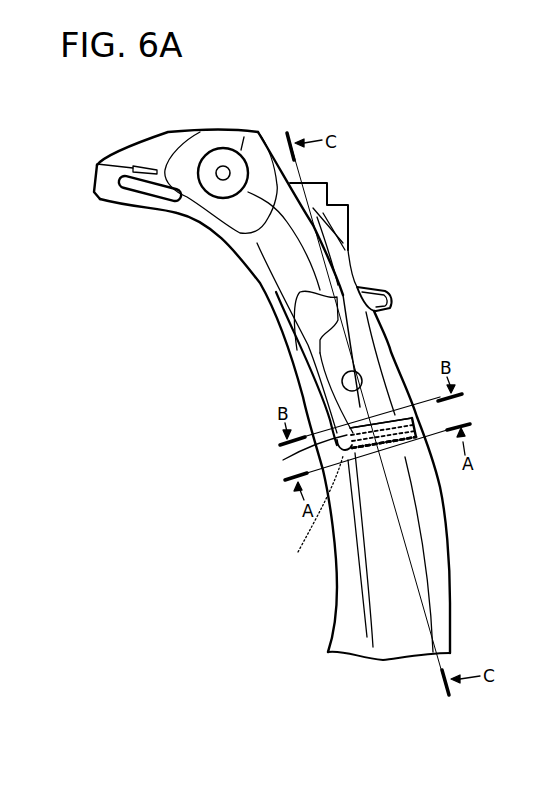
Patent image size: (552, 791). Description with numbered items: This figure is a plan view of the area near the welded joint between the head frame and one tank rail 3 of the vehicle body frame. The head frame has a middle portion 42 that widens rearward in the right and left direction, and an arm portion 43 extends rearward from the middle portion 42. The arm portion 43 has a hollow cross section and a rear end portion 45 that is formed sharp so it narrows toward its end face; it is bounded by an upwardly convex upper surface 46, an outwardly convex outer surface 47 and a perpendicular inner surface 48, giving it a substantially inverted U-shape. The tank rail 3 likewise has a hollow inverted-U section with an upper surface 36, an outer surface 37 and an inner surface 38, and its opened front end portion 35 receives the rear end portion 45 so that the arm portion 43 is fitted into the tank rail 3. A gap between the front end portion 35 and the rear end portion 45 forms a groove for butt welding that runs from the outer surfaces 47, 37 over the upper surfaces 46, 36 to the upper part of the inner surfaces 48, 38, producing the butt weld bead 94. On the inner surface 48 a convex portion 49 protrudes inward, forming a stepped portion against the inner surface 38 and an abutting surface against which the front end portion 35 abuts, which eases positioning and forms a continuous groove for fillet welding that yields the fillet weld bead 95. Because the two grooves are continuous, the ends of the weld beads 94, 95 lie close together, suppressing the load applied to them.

The tank rail 3 is at (442, 550).
The front end portion 35 is at (410, 441).
The upper surface 36 is at (440, 467).
The outer surface 37 is at (445, 510).
The inner surface 38 is at (360, 513).
The middle portion 42 is at (193, 215).
The arm portion 43 is at (380, 343).
The rear end portion 45 is at (418, 414).
The upper surface 46 is at (444, 408).
The outer surface 47 is at (392, 353).
The inner surface 48 is at (307, 400).
The convex portion 49 is at (302, 461).
The weld bead 94 is at (417, 423).
The weld bead 95 is at (309, 513).